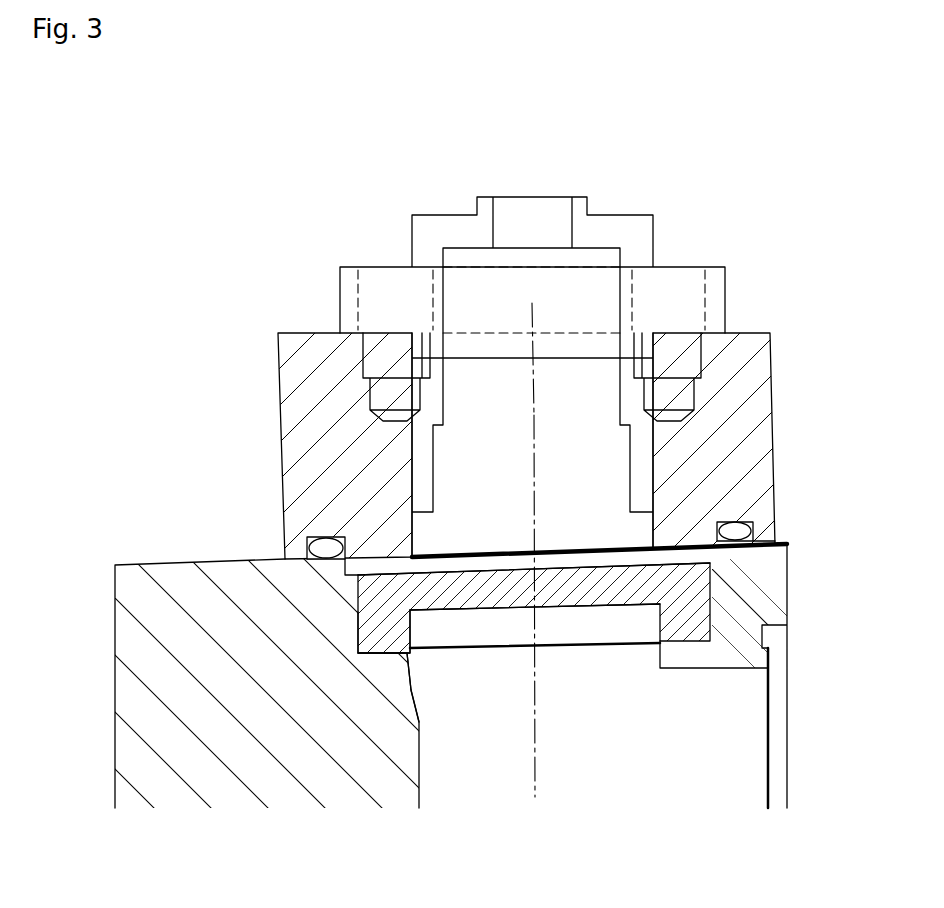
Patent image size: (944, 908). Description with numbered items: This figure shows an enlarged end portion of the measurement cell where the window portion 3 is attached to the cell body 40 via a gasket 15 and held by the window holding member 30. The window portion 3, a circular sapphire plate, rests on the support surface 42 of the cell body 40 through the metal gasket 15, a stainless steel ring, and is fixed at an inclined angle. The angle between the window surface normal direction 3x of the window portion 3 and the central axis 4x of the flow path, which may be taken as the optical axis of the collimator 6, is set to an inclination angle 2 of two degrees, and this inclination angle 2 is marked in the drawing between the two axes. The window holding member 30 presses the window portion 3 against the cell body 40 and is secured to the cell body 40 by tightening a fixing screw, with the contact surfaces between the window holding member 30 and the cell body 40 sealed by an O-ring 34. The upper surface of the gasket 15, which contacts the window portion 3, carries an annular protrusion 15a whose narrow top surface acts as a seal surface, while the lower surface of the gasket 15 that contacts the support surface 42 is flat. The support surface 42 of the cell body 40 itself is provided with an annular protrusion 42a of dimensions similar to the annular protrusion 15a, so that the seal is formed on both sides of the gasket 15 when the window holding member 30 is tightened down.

The window portion 3 is at (762, 642).
The window surface normal direction 3x is at (527, 397).
The central axis 4x is at (535, 662).
The collimator 6 is at (562, 290).
The gasket 15 is at (357, 640).
The annular protrusion 15a is at (357, 605).
The window holding member 30 is at (752, 437).
The O-ring 34 is at (737, 535).
The cell body 40 is at (180, 587).
The support surface 42 is at (367, 655).
The annular protrusion 42a is at (398, 652).
The inclination angle 2 degrees 2 is at (537, 323).